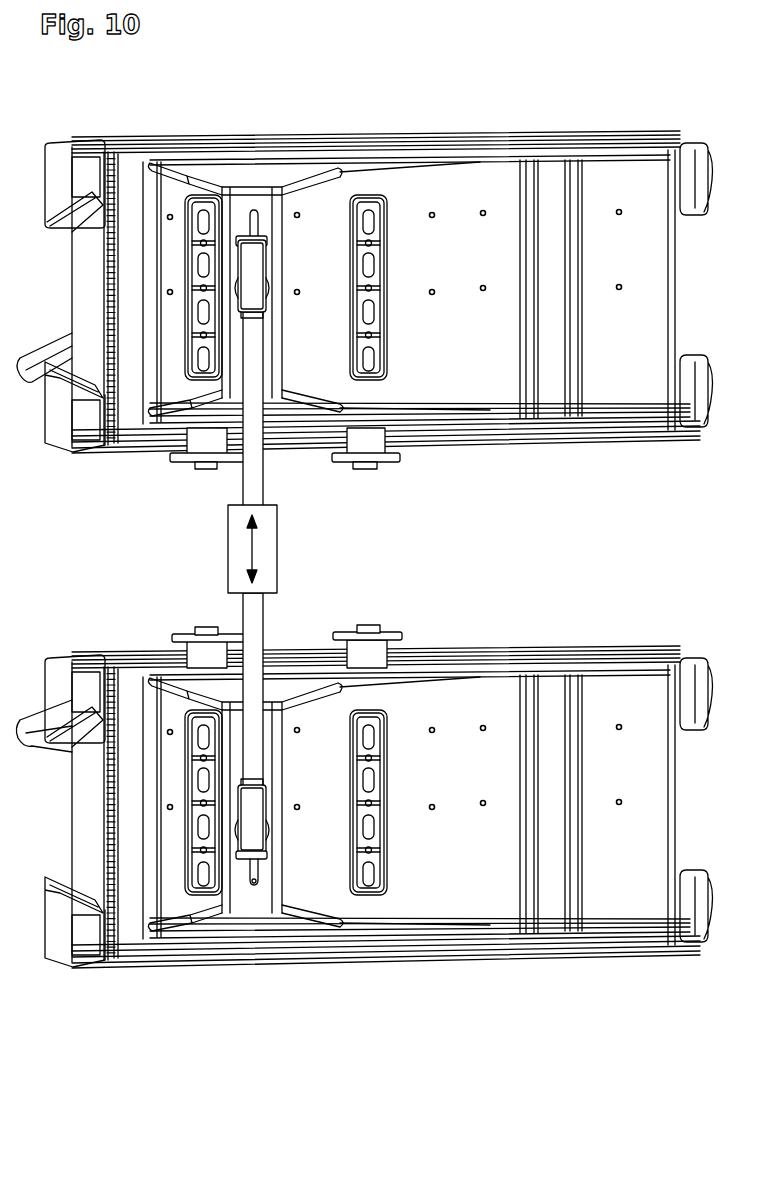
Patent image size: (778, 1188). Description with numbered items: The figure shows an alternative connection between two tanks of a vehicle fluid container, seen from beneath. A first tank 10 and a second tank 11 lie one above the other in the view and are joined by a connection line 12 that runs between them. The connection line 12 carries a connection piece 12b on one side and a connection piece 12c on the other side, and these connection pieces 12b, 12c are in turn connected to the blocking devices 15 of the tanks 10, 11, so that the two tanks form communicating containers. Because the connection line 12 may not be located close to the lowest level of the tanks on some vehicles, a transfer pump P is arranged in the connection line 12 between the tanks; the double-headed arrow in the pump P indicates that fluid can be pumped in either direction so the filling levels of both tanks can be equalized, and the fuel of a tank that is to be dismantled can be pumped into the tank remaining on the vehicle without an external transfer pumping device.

The first tank 10 is at (437, 965).
The second tank 11 is at (437, 128).
The connection line 12 is at (258, 617).
The connection piece 12b is at (252, 375).
The connection piece 12c is at (255, 748).
The blocking device 15 is at (250, 265).
The pump P is at (240, 550).